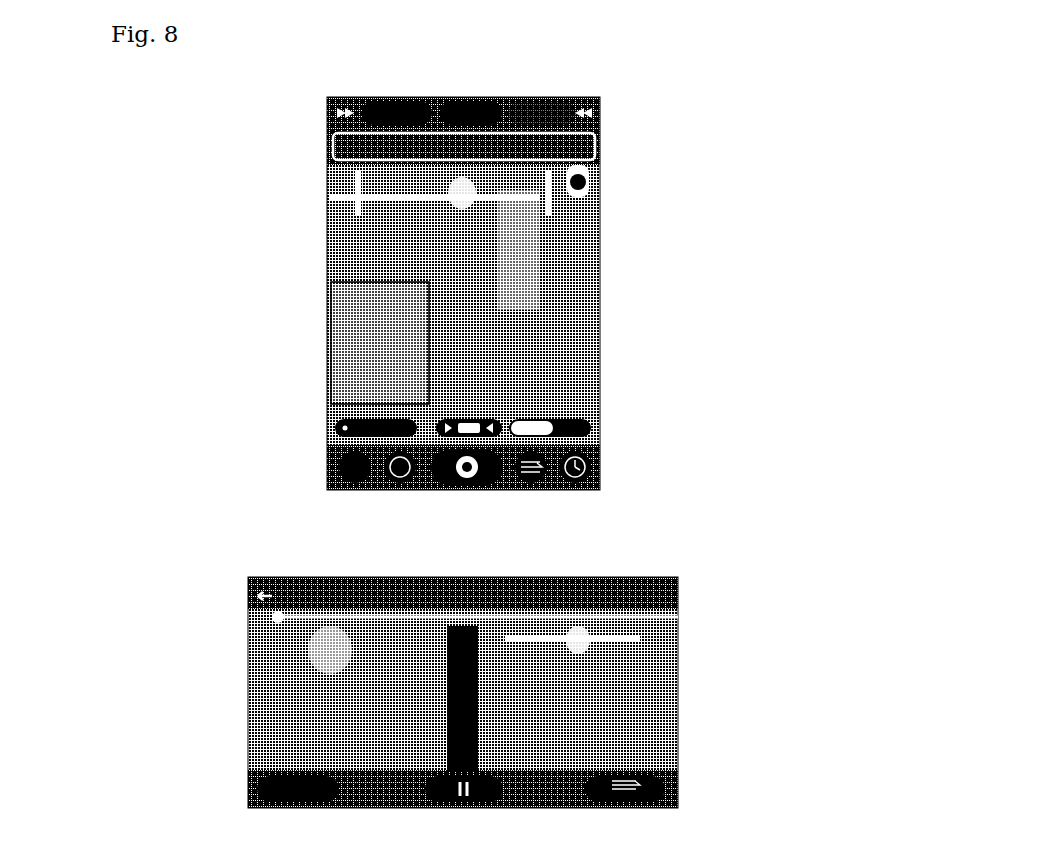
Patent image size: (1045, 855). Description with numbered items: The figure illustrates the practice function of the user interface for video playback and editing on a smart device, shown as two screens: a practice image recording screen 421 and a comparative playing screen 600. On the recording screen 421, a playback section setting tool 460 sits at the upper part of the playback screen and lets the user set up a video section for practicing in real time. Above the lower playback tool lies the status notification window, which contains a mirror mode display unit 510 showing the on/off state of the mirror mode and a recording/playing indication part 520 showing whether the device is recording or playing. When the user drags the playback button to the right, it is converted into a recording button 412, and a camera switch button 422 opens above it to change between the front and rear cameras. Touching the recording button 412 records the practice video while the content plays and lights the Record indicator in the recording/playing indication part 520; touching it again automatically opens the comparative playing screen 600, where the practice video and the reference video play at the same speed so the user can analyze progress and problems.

The playback section setting tool 460 is at (603, 98).
The camera switch button 422 is at (493, 402).
The mirror mode display unit 510 is at (329, 426).
The recording/playing indication part 520 is at (600, 428).
The recording button 412 is at (443, 487).
The practice image recording screen 421 is at (498, 321).
The comparative playing screen 600 is at (477, 713).